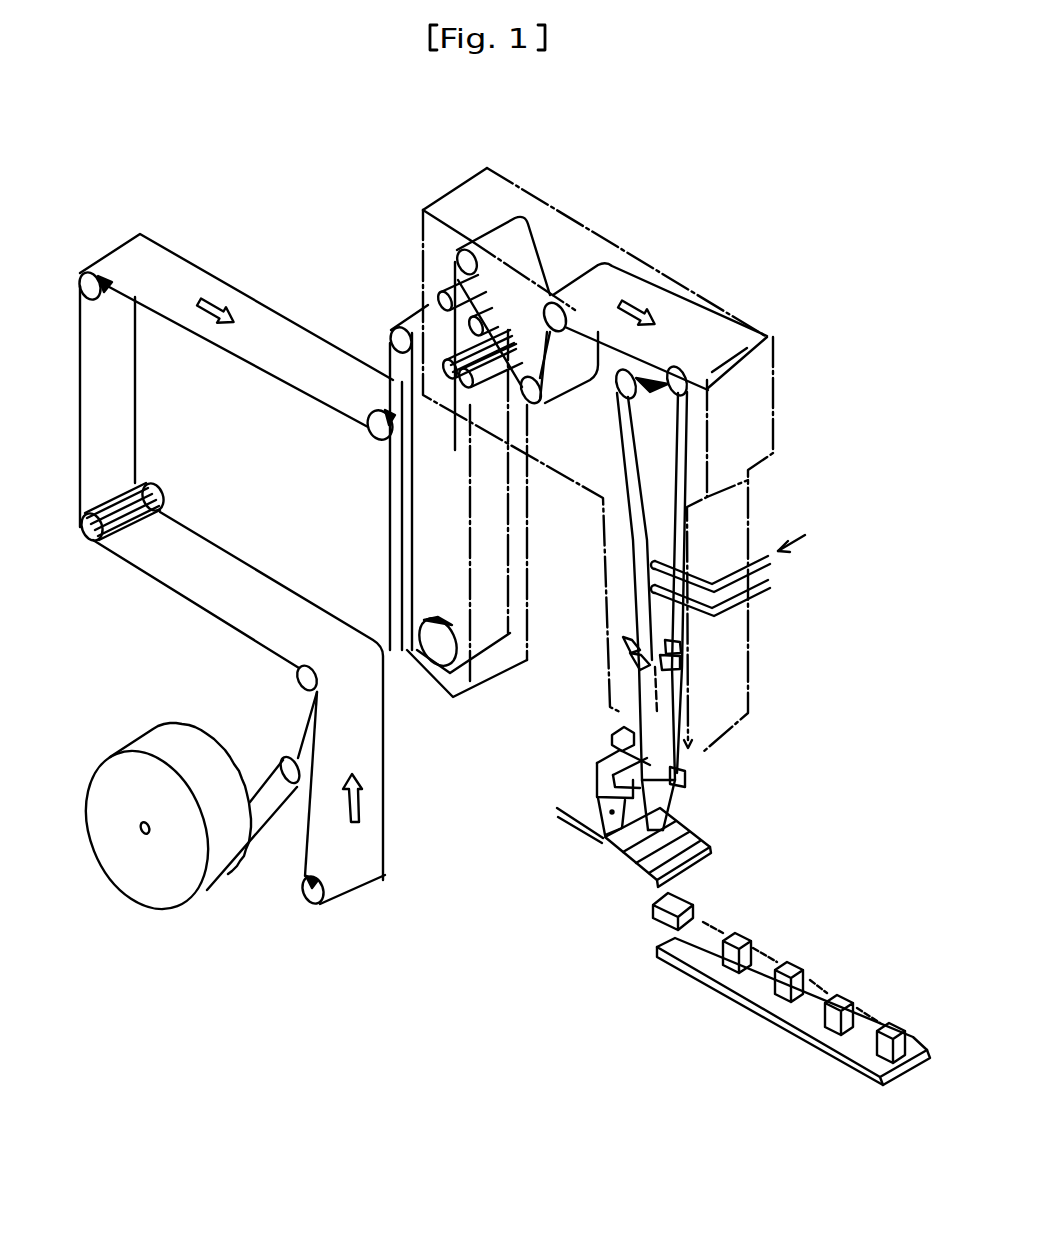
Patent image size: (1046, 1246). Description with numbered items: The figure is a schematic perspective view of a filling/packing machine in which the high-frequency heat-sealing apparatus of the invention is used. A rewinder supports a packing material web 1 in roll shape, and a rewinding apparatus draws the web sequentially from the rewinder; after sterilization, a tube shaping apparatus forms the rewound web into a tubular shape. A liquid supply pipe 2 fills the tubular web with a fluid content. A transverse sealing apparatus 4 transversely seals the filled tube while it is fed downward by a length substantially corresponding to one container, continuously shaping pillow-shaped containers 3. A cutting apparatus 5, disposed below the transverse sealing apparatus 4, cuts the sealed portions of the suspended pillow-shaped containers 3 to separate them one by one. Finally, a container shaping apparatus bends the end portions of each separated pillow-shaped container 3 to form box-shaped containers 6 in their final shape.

The packing material web 1 is at (160, 586).
The liquid supply pipe 2 is at (727, 562).
The pillow-shaped container 3 is at (680, 790).
The transverse sealing apparatus 4 is at (590, 770).
The cutting apparatus 5 is at (587, 846).
The box-shaped container 6 is at (900, 1017).